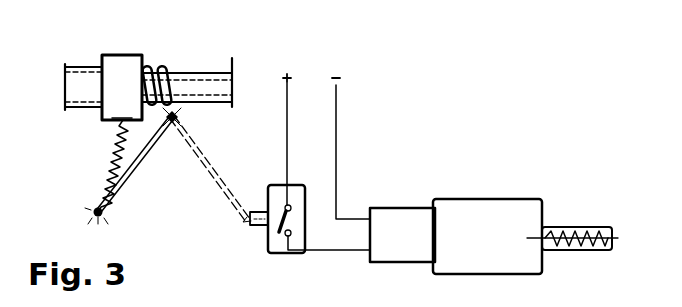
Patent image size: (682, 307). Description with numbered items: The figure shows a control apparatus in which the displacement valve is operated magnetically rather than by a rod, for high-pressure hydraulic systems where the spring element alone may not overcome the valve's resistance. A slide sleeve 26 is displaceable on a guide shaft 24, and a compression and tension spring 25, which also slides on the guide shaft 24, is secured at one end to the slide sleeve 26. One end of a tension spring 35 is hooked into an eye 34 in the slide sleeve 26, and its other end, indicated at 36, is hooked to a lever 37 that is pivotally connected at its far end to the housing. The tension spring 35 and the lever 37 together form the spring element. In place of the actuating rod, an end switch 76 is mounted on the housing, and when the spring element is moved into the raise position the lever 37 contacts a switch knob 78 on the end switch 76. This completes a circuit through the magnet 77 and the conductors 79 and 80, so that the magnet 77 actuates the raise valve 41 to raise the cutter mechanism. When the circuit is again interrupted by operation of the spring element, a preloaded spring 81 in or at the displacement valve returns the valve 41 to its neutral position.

The guide shaft 24 is at (209, 77).
The compression and tension spring 25 is at (146, 63).
The slide sleeve 26 is at (115, 92).
The eye 34 is at (125, 111).
The tension spring 35 is at (108, 155).
The hooked end of tension spring 36 is at (94, 213).
The lever 37 is at (110, 181).
The raise valve 41 is at (506, 213).
The end switch 76 is at (268, 250).
The magnet 77 is at (425, 220).
The switch knob 78 is at (248, 216).
The conductor 79 is at (288, 132).
The conductor 80 is at (337, 132).
The preloaded spring 81 is at (602, 228).